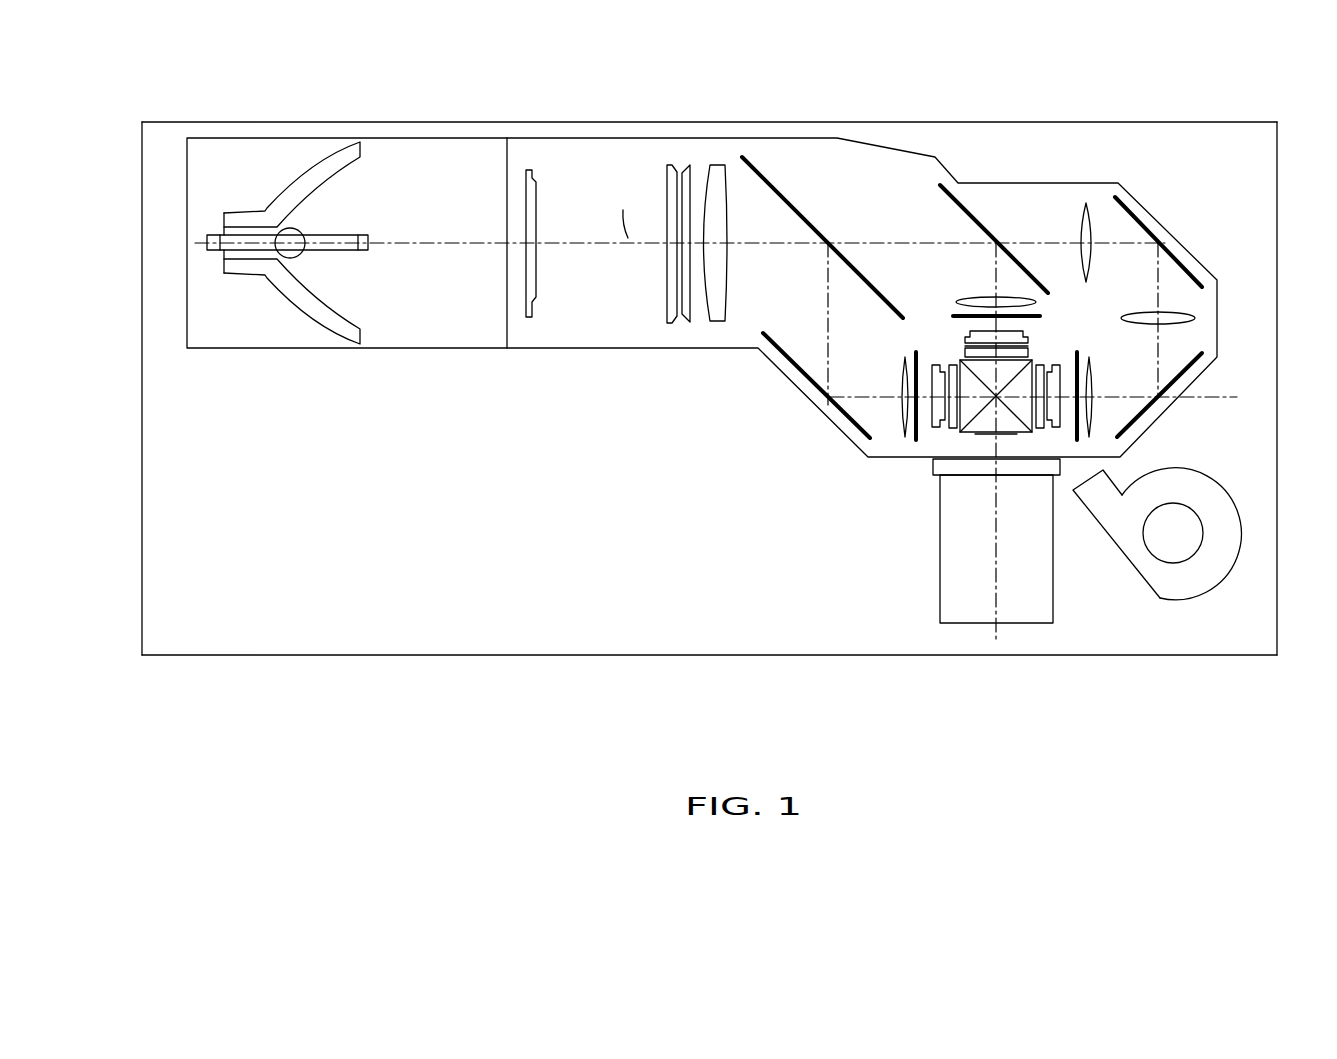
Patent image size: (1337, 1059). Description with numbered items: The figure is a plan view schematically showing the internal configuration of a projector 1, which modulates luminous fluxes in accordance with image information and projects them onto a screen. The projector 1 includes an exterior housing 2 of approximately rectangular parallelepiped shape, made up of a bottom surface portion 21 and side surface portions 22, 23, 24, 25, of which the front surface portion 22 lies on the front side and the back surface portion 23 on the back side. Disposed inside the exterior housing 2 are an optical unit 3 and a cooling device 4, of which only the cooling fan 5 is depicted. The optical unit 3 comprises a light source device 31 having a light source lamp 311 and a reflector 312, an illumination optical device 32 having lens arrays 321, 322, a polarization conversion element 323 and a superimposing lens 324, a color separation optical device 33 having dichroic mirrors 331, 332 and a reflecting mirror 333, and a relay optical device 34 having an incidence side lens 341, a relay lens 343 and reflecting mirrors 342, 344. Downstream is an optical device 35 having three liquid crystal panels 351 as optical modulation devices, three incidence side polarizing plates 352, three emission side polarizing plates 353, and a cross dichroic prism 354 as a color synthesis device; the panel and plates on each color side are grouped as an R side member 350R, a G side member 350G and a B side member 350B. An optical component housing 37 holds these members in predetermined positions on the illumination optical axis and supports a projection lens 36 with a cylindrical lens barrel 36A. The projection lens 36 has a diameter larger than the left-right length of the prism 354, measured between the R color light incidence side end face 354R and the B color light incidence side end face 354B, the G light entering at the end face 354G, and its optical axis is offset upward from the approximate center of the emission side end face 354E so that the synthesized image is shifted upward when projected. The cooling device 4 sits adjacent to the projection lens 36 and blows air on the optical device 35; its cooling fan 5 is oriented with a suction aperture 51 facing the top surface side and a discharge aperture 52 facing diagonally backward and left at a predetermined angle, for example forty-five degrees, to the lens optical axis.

The projector 1 is at (163, 95).
The exterior housing 2 is at (1278, 384).
The bottom surface portion 21 is at (1150, 122).
The front surface portion 22 is at (750, 657).
The back surface portion 23 is at (968, 122).
The side surface portion 24 is at (142, 622).
The side surface portion 25 is at (1277, 248).
The optical unit 3 is at (620, 450).
The light source device 31 is at (333, 393).
The light source lamp 311 is at (292, 256).
The reflector 312 is at (321, 318).
The illumination optical device 32 is at (642, 165).
The lens array 321 is at (533, 298).
The lens array 322 is at (666, 298).
The polarization conversion element 323 is at (683, 312).
The superimposing lens 324 is at (718, 315).
The color separation optical device 33 is at (838, 185).
The dichroic mirror 331 is at (782, 165).
The dichroic mirror 332 is at (963, 205).
The reflecting mirror 333 is at (830, 418).
The relay optical device 34 is at (1190, 240).
The incidence side lens 341 is at (1078, 224).
The reflecting mirror 342 is at (1145, 218).
The relay lens 343 is at (1178, 313).
The reflecting mirror 344 is at (1142, 416).
The optical device 35 is at (1063, 445).
The R side member 350R is at (922, 509).
The G side member 350G is at (995, 276).
The B side member 350B is at (1122, 345).
The liquid crystal panel 351 is at (937, 430).
The incidence side polarizing plate 352 is at (917, 442).
The emission side polarizing plate 353 is at (952, 430).
The cross dichroic prism 354 is at (965, 352).
The R color light incidence side end face 354R is at (908, 380).
The G color light incidence side end face 354G is at (1015, 346).
The B color light incidence side end face 354B is at (1045, 432).
The emission side end face 354E is at (988, 437).
The projection lens 36 is at (1052, 572).
The lens barrel 36A is at (948, 585).
The optical component housing 37 is at (596, 138).
The cooling device 4 is at (1227, 528).
The cooling fan 5 is at (1157, 541).
The suction aperture 51 is at (1175, 547).
The discharge aperture 52 is at (1090, 468).